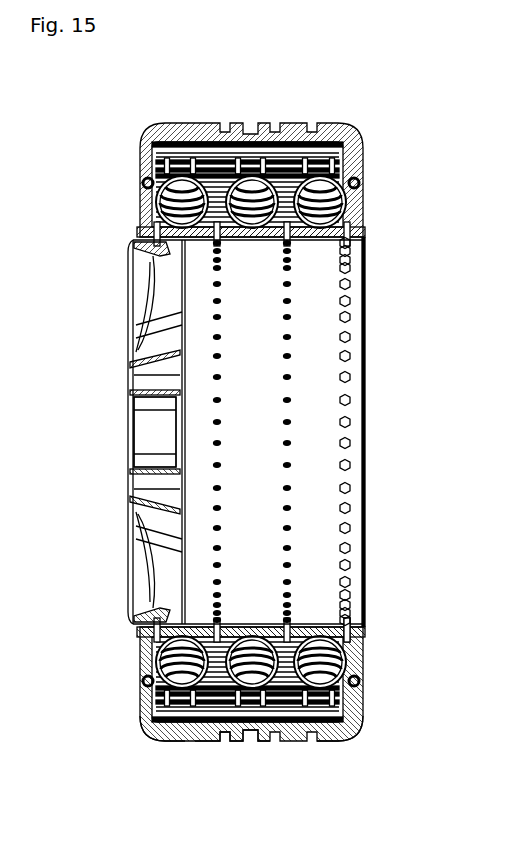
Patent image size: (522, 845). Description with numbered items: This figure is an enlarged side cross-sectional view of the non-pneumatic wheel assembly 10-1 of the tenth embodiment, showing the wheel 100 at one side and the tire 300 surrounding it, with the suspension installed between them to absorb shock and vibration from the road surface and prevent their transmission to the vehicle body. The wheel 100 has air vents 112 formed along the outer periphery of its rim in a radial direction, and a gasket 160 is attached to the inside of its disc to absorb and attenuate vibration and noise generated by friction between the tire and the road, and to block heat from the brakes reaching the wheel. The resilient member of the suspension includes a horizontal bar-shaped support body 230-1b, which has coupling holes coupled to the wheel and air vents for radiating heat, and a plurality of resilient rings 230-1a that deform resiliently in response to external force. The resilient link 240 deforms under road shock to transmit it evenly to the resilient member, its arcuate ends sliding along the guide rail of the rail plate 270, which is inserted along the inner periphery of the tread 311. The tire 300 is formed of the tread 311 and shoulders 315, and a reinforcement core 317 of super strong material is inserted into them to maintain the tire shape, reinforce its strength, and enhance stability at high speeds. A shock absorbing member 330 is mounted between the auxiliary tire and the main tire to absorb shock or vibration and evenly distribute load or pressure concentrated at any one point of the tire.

The tire 300 is at (367, 124).
The reinforcement core 317 is at (359, 183).
The shoulders 315 is at (364, 698).
The resilient link 240 is at (146, 684).
The support body 230-1b is at (140, 628).
The resilient rings 230-1a is at (351, 659).
The tread 311 is at (202, 745).
The shock absorbing member 330 is at (337, 745).
The rail plate 270 is at (145, 744).
The wheel 100 is at (133, 289).
The gasket 160 is at (150, 317).
The air vents 112 is at (287, 467).
The non-pneumatic wheel assembly 10-1 is at (277, 836).